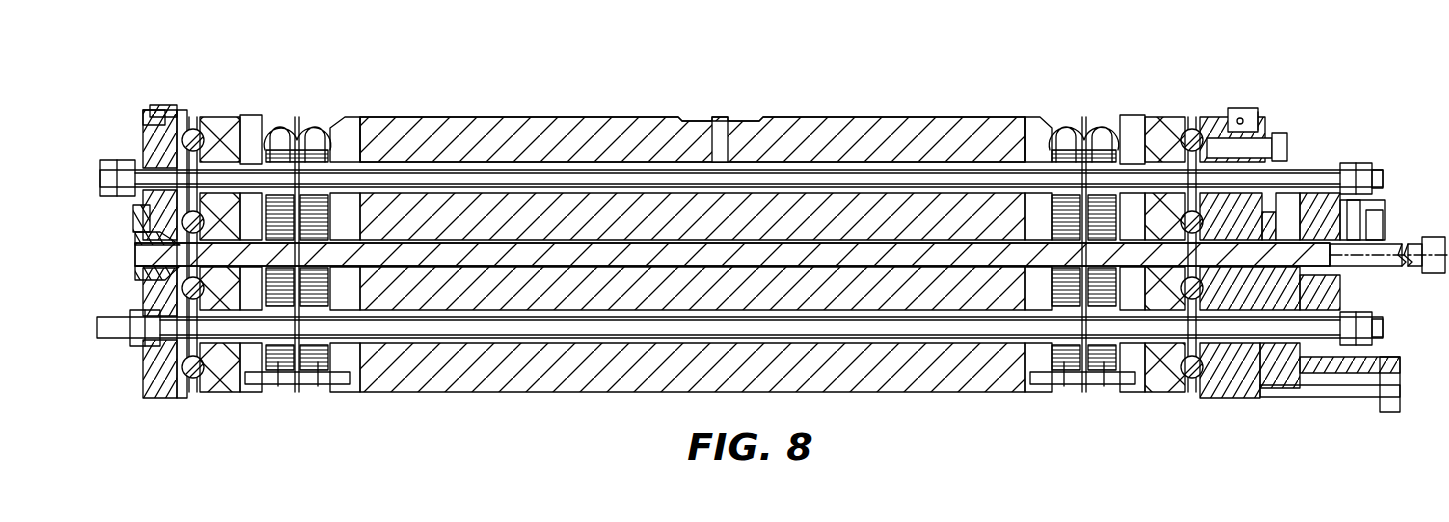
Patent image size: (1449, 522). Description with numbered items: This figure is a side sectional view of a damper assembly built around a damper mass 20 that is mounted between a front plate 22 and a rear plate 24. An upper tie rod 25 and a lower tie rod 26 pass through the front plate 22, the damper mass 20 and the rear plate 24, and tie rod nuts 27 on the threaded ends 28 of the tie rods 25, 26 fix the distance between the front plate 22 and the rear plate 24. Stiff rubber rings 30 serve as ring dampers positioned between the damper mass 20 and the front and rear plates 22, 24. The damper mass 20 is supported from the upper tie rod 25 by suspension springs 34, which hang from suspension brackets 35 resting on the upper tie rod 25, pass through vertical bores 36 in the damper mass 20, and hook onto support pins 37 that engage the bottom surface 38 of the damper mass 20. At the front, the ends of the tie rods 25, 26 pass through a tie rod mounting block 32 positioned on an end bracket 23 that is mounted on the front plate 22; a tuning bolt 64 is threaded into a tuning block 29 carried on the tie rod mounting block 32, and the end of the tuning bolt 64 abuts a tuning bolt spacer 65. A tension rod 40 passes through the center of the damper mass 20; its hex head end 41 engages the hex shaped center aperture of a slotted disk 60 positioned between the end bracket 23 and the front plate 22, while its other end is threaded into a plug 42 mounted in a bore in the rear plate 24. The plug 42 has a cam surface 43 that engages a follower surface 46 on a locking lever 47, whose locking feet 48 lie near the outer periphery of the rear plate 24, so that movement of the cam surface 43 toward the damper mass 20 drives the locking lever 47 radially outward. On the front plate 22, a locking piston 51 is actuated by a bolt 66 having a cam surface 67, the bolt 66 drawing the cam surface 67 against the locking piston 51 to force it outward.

The damper mass 20 is at (651, 135).
The front plate 22 is at (1247, 355).
The end bracket 23 is at (1278, 352).
The rear plate 24 is at (162, 398).
The upper tie rod 25 is at (476, 178).
The lower tie rod 26 is at (568, 338).
The tie rod nut 27 is at (112, 168).
The threaded end 28 is at (112, 338).
The tuning block 29 is at (1352, 277).
The rubber ring 30 is at (203, 132).
The tie rod mounting block 32 is at (1328, 300).
The suspension spring 34 is at (318, 298).
The suspension bracket 35 is at (312, 125).
The vertical bore 36 is at (345, 130).
The support pin 37 is at (292, 384).
The bottom surface 38 is at (436, 392).
The tension rod 40 is at (672, 266).
The hex head end 41 is at (1283, 267).
The plug 42 is at (152, 250).
The cam surface 43 is at (150, 218).
The follower surface 46 is at (160, 268).
The locking lever 47 is at (168, 130).
The locking foot 48 is at (158, 115).
The locking piston 51 is at (1250, 110).
The slotted disk 60 is at (1270, 215).
The tuning bolt 64 is at (1412, 240).
The tuning bolt spacer 65 is at (1310, 232).
The bolt 66 is at (1265, 140).
The cam surface 67 is at (1240, 118).